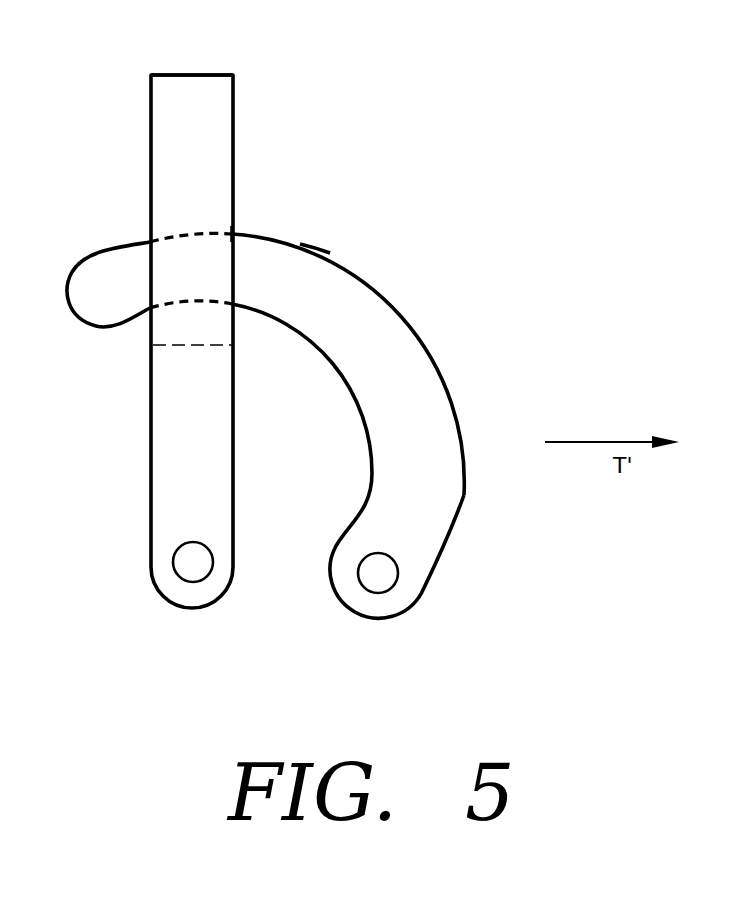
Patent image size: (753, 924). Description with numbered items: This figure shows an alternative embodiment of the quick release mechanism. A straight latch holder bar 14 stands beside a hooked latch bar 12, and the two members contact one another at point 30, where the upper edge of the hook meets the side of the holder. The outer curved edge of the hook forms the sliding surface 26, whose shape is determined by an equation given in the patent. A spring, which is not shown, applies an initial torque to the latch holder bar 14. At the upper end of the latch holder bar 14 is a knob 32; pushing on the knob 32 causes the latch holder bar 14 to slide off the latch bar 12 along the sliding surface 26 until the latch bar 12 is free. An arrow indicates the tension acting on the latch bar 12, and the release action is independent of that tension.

The latch bar 12 is at (455, 403).
The latch holder bar 14 is at (157, 455).
The sliding surface 26 is at (315, 248).
The contact point 30 is at (236, 230).
The knob 32 is at (222, 95).